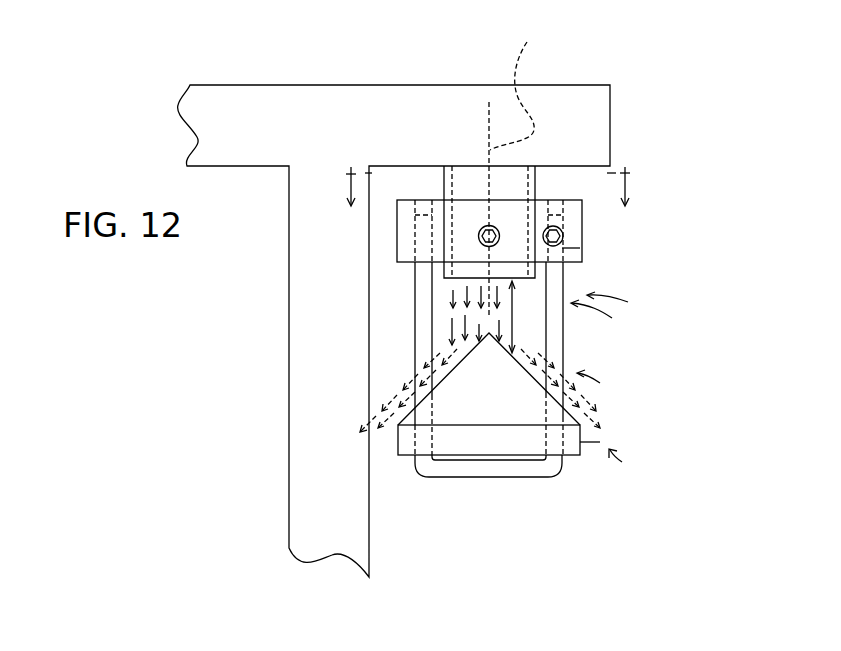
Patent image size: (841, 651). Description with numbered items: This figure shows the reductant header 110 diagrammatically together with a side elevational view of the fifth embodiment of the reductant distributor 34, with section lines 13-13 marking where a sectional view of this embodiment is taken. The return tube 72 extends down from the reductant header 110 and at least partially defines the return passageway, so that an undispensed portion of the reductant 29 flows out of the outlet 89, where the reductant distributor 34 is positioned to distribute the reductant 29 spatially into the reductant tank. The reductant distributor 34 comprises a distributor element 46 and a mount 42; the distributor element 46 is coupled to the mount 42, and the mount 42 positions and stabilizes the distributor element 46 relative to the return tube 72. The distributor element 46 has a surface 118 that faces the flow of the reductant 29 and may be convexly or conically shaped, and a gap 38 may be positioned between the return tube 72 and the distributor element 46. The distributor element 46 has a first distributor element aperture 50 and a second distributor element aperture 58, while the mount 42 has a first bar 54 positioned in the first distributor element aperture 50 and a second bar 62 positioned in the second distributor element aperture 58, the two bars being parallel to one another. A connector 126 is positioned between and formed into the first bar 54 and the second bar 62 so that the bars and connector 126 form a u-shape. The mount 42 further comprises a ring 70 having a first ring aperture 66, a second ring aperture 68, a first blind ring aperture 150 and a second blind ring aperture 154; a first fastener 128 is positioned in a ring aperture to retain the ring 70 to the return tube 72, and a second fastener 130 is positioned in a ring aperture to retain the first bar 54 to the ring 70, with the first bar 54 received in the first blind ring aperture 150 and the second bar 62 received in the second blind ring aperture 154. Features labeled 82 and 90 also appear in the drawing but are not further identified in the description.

The reductant header 110 is at (415, 51).
The duct outlet 82 is at (519, 85).
The return tube 72 is at (449, 170).
The second ring aperture 68 is at (480, 232).
The second fastener 130 is at (500, 233).
The second blind ring aperture 154 is at (412, 238).
The section line 13 is at (488, 184).
The collar wall 90 is at (535, 213).
The first ring aperture 66 is at (565, 222).
The ring 70 is at (562, 248).
The first fastener 128 is at (582, 256).
The first blind ring aperture 150 is at (590, 268).
The reductant distributor 34 is at (590, 300).
The mount 42 is at (580, 335).
The first bar 54 is at (557, 347).
The reductant 29 is at (578, 405).
The surface 118 is at (582, 428).
The distributor element 46 is at (622, 462).
The first distributor element aperture 50 is at (580, 442).
The second distributor element aperture 58 is at (413, 442).
The connector 126 is at (503, 467).
The outlet 89 is at (463, 281).
The second bar 62 is at (424, 342).
The gap 38 is at (512, 334).